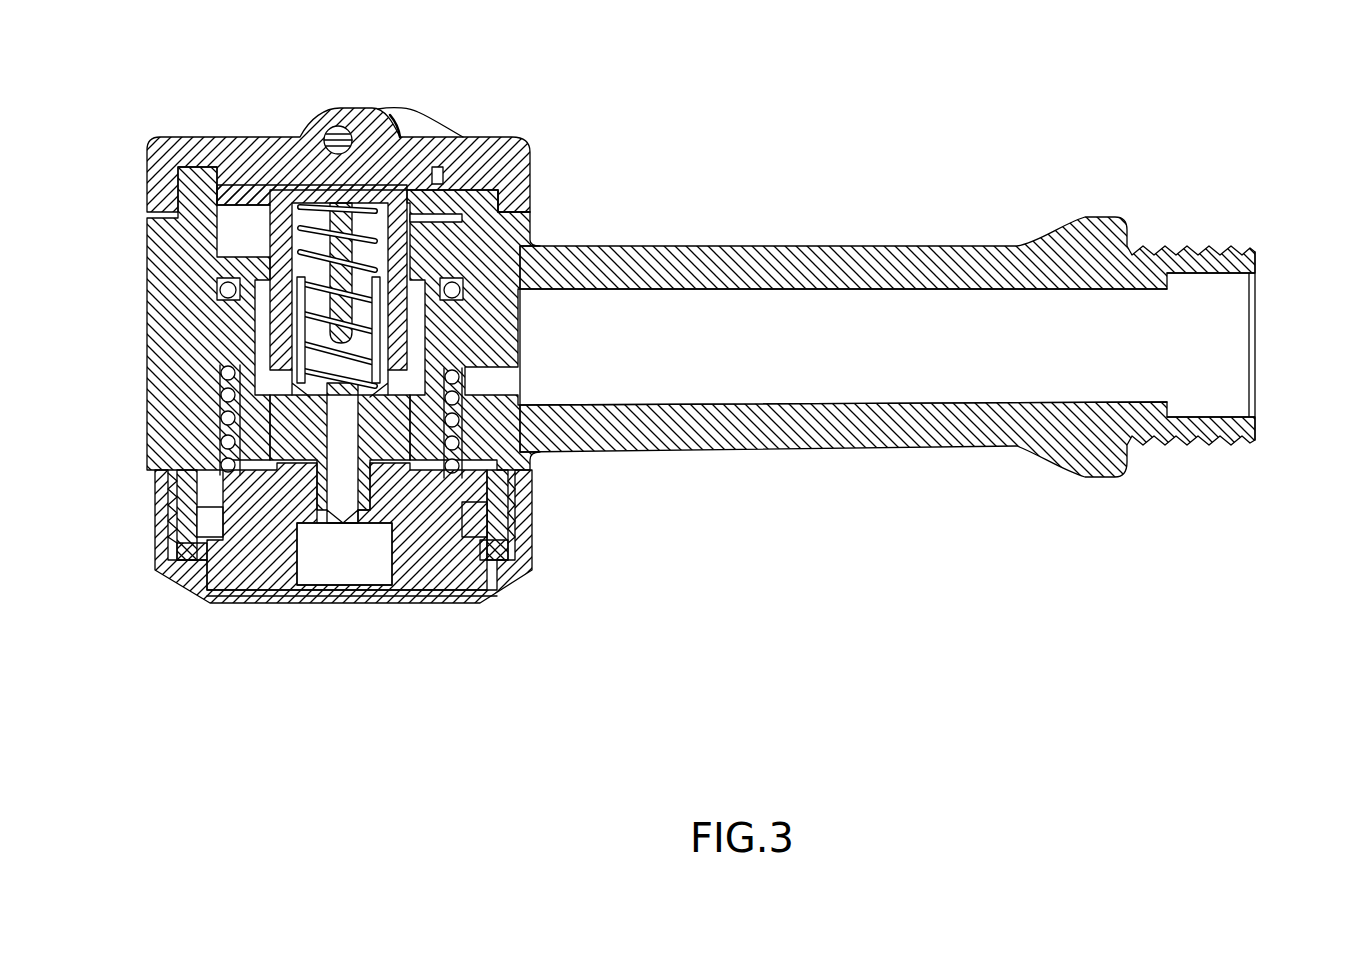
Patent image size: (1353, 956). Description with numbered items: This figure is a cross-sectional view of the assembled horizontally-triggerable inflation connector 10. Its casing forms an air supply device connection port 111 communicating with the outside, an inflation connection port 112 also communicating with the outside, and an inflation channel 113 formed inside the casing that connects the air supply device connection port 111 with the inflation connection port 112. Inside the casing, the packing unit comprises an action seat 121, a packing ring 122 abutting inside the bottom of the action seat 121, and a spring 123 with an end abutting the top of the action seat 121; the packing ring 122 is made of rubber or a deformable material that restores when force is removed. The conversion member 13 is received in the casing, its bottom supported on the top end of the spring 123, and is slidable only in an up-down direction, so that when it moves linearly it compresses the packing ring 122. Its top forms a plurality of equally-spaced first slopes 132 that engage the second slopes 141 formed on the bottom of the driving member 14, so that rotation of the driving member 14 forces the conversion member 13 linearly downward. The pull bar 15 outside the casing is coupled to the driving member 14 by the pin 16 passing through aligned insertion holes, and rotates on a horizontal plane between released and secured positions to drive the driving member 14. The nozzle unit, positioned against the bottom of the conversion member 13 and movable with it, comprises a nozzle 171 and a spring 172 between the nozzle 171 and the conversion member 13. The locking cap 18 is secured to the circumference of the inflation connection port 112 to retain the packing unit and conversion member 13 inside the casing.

The horizontally-triggerable inflation connector 10 is at (1033, 140).
The air supply device connection port 111 is at (1250, 306).
The inflation connection port 112 is at (357, 572).
The inflation channel 113 is at (788, 318).
The action seat 121 is at (205, 452).
The packing ring 122 is at (264, 575).
The spring 123 is at (225, 388).
The conversion member 13 is at (228, 271).
The first slopes 132 is at (435, 248).
The driving member 14 is at (300, 137).
The second slopes 141 is at (533, 192).
The pull bar 15 is at (420, 124).
The pin 16 is at (366, 110).
The nozzle 171 is at (182, 494).
The spring 172 is at (277, 212).
The locking cap 18 is at (515, 578).